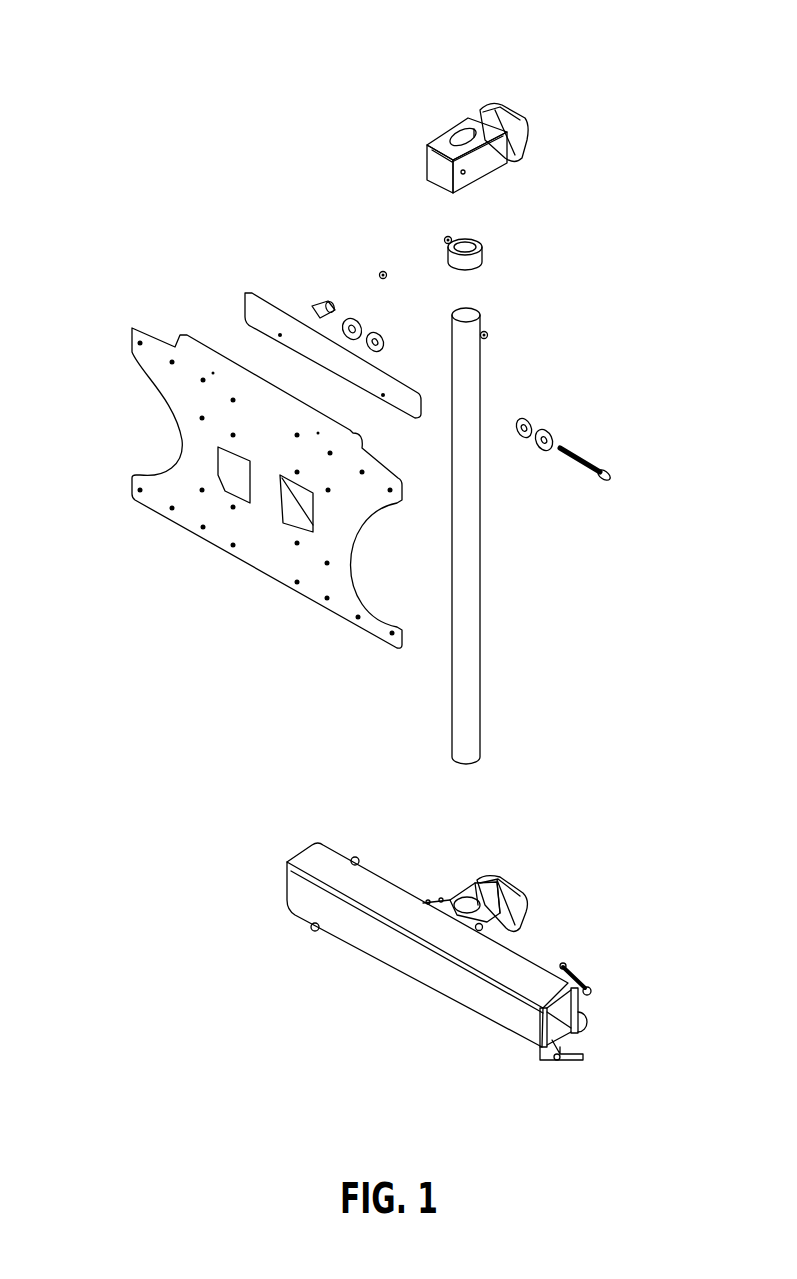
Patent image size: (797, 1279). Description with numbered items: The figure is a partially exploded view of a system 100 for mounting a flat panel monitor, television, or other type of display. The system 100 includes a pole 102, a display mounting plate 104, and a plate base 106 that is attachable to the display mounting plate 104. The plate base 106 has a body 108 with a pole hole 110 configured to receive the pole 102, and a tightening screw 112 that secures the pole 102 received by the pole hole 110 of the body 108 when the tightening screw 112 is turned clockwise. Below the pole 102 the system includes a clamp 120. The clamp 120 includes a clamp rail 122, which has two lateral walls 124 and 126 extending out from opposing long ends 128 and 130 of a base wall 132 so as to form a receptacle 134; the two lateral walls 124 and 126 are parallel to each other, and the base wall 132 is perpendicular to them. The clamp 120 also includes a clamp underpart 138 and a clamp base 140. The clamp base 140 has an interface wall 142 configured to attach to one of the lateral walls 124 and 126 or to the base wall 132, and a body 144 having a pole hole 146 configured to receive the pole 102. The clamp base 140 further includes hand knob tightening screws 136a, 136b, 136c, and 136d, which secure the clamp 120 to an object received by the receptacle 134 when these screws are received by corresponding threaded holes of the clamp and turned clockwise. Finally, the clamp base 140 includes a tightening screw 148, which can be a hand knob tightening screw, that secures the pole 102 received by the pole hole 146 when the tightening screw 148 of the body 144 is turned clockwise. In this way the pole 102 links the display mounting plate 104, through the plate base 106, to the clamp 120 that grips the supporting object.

The system 100 is at (90, 48).
The pole 102 is at (481, 612).
The display mounting plate 104 is at (288, 588).
The plate base 106 is at (372, 101).
The body 108 is at (433, 175).
The pole hole 110 is at (442, 113).
The tightening screw 112 is at (522, 122).
The clamp 120 is at (257, 814).
The clamp rail 122 is at (314, 957).
The lateral wall 124 is at (577, 1005).
The lateral wall 126 is at (477, 993).
The long end 128 is at (427, 943).
The long end 130 is at (538, 965).
The base wall 132 is at (368, 883).
The receptacle 134 is at (598, 1049).
The hand knob tightening screw 136a is at (353, 857).
The hand knob tightening screw 136b is at (575, 972).
The hand knob tightening screw 136c is at (557, 1060).
The hand knob tightening screw 136d is at (310, 928).
The clamp underpart 138 is at (558, 1040).
The clamp base 140 is at (498, 833).
The interface wall 142 is at (433, 880).
The body 144 is at (490, 930).
The pole hole 146 is at (467, 883).
The tightening screw 148 is at (520, 898).